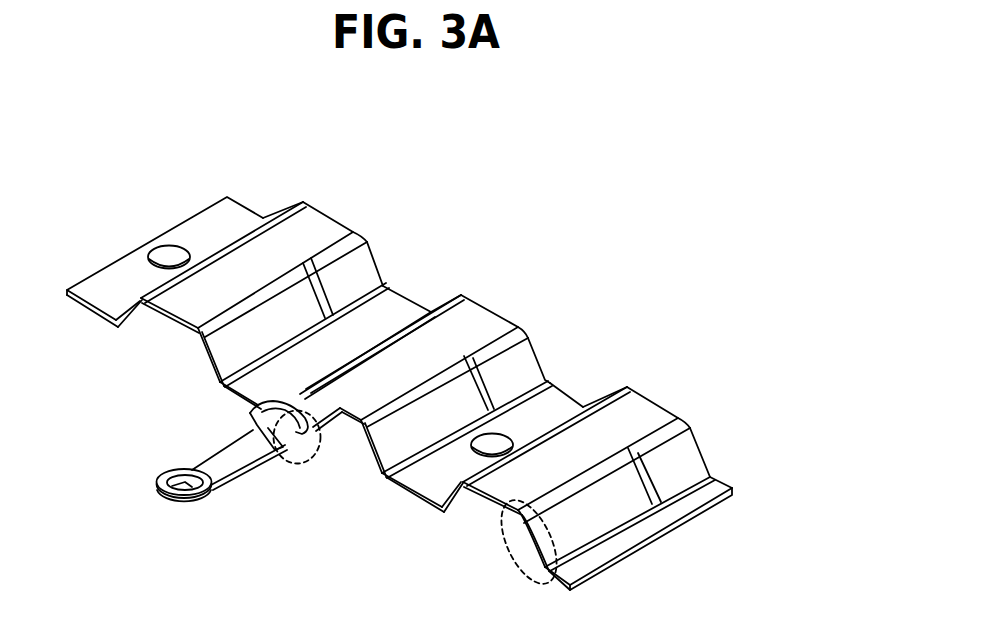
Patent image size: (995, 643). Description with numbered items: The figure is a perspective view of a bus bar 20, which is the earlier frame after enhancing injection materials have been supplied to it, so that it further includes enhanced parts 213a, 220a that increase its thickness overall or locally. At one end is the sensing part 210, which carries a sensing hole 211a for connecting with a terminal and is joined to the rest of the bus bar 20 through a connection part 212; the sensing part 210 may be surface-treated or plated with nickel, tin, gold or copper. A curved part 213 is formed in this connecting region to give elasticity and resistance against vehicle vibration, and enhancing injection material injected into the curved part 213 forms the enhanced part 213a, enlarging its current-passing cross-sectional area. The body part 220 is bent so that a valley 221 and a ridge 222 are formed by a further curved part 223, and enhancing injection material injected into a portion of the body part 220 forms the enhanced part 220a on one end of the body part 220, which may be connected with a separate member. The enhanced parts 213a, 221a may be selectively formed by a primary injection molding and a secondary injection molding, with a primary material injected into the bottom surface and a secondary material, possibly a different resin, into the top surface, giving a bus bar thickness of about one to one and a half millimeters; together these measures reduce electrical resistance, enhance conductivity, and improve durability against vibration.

The bus bar 20 is at (368, 142).
The sensing part 210 is at (210, 506).
The ring terminal hole 211a is at (157, 475).
The terminal bar 212 is at (206, 453).
The curved part 213 is at (260, 420).
The enhanced part 213a is at (302, 463).
The body part 220 is at (403, 290).
The enhanced part 220a is at (714, 507).
The connection pad 221 is at (573, 403).
The enhanced part 221a is at (170, 257).
The raised bridge portion 222 is at (480, 318).
The bent portion 223 is at (516, 550).